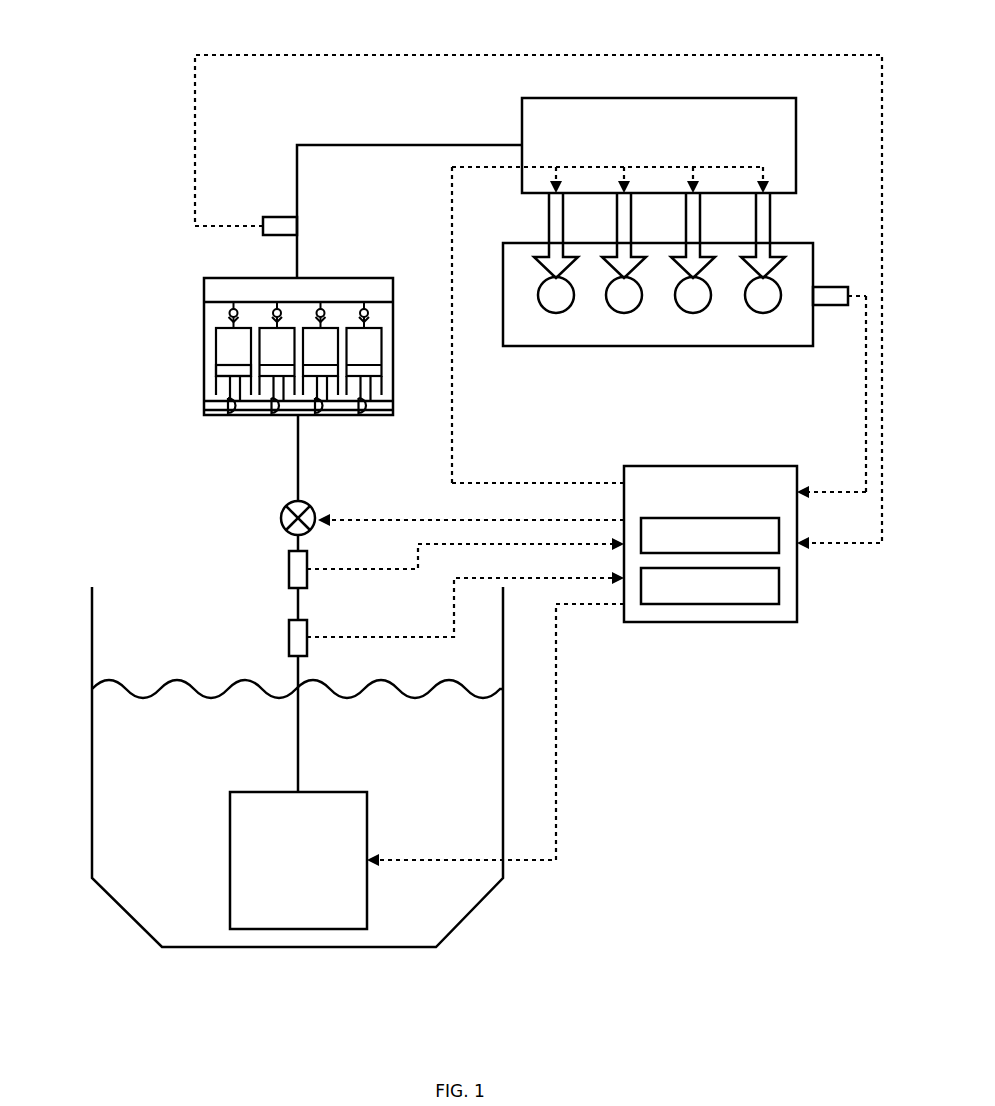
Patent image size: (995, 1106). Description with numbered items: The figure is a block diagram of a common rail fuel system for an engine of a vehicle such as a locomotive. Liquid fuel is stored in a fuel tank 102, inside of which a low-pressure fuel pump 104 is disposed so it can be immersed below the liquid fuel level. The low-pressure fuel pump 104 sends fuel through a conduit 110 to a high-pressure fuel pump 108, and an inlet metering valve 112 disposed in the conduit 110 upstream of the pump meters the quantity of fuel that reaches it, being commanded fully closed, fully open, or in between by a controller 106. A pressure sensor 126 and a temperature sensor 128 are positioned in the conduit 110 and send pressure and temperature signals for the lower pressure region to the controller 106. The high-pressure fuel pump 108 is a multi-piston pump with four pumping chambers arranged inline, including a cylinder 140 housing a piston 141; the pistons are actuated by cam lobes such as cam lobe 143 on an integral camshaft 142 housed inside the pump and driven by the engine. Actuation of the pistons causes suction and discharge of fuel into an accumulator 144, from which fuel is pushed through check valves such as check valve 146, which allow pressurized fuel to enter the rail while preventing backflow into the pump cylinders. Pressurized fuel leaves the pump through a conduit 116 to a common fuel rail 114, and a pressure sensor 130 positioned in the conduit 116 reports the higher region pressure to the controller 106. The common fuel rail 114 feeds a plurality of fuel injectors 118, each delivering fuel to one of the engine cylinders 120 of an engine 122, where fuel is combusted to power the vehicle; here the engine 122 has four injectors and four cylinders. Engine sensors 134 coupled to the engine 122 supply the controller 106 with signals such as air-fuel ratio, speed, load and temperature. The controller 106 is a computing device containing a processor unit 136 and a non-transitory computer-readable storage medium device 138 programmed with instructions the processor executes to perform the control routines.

The fuel tank 102 is at (92, 625).
The low-pressure fuel pump 104 is at (298, 860).
The controller 106 is at (710, 544).
The high-pressure fuel pump 108 is at (358, 277).
The conduit 110 is at (300, 757).
The inlet metering valve 112 is at (282, 512).
The common fuel rail 114 is at (659, 145).
The conduit 116 is at (508, 143).
The fuel injectors 118 is at (549, 226).
The engine cylinders 120 is at (556, 313).
The engine 122 is at (657, 346).
The pressure sensor 126 is at (305, 619).
The temperature sensor 128 is at (305, 550).
The pressure sensor 130 is at (285, 217).
The engine sensors 134 is at (818, 287).
The processor unit 136 is at (710, 535).
The non-transitory computer-readable storage medium device 138 is at (710, 586).
The cylinder 140 is at (226, 348).
The piston 141 is at (230, 370).
The camshaft 142 is at (212, 399).
The cam lobe 143 is at (236, 413).
The accumulator 144 is at (227, 287).
The check valve 146 is at (229, 312).